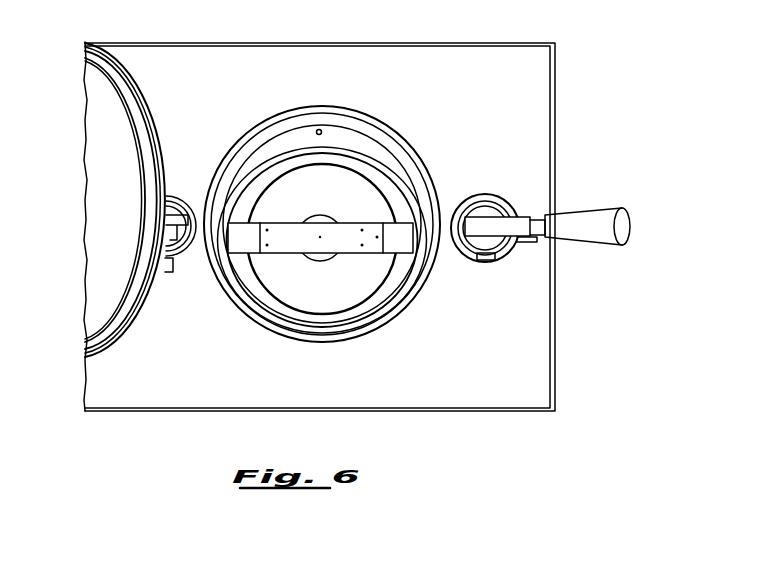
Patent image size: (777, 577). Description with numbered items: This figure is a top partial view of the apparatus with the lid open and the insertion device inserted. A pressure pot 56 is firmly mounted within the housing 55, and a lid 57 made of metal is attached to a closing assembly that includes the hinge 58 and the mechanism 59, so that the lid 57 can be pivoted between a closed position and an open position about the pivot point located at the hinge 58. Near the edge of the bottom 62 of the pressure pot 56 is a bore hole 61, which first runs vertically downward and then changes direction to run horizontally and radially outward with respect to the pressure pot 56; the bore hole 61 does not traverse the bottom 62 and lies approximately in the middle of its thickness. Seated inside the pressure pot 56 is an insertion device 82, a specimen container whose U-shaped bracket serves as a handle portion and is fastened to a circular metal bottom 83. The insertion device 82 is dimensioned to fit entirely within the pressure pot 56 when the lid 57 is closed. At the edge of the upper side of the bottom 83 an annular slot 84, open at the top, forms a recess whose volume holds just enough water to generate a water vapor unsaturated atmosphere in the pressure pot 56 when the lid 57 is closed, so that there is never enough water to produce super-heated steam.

The housing 55 is at (558, 118).
The pressure pot 56 is at (270, 136).
The lid 57 is at (112, 101).
The hinge 58 is at (173, 262).
The mechanism 59 is at (510, 195).
The bore hole 61 is at (323, 132).
The bottom of the pressure pot 62 is at (402, 178).
The insertion device 82 is at (380, 170).
The circular metal bottom 83 is at (410, 250).
The annular slot 84 is at (362, 168).